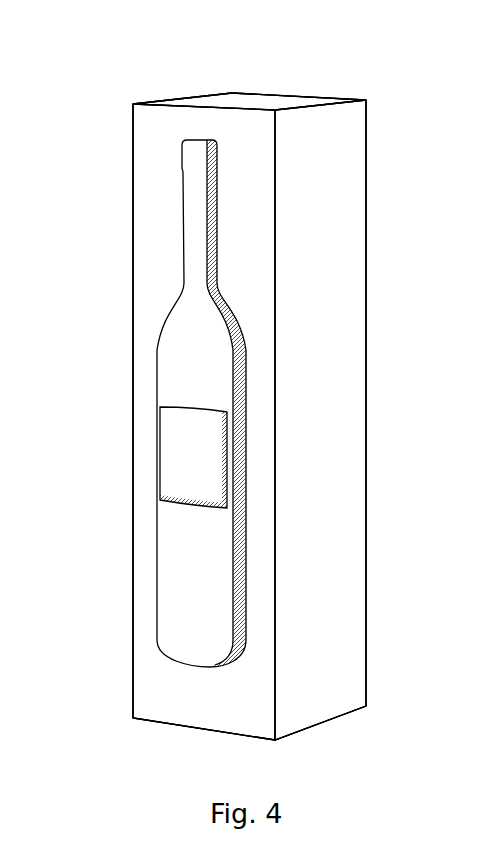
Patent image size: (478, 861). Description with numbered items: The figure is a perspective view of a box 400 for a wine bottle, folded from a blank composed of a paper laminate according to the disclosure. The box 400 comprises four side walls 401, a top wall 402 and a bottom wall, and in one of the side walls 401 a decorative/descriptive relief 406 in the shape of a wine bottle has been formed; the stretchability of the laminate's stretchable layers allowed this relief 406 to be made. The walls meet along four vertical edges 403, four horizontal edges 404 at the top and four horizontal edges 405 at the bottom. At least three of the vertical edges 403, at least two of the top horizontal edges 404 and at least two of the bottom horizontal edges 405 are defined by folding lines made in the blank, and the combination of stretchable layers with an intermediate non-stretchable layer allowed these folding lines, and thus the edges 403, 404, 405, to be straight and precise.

The box 400 is at (365, 80).
The side wall 401 is at (137, 148).
The top wall 402 is at (247, 100).
The vertical edge 403 is at (366, 337).
The horizontal edge at the top 404 is at (184, 96).
The horizontal edge at the bottom 405 is at (193, 727).
The decorative/descriptive relief 406 is at (172, 352).